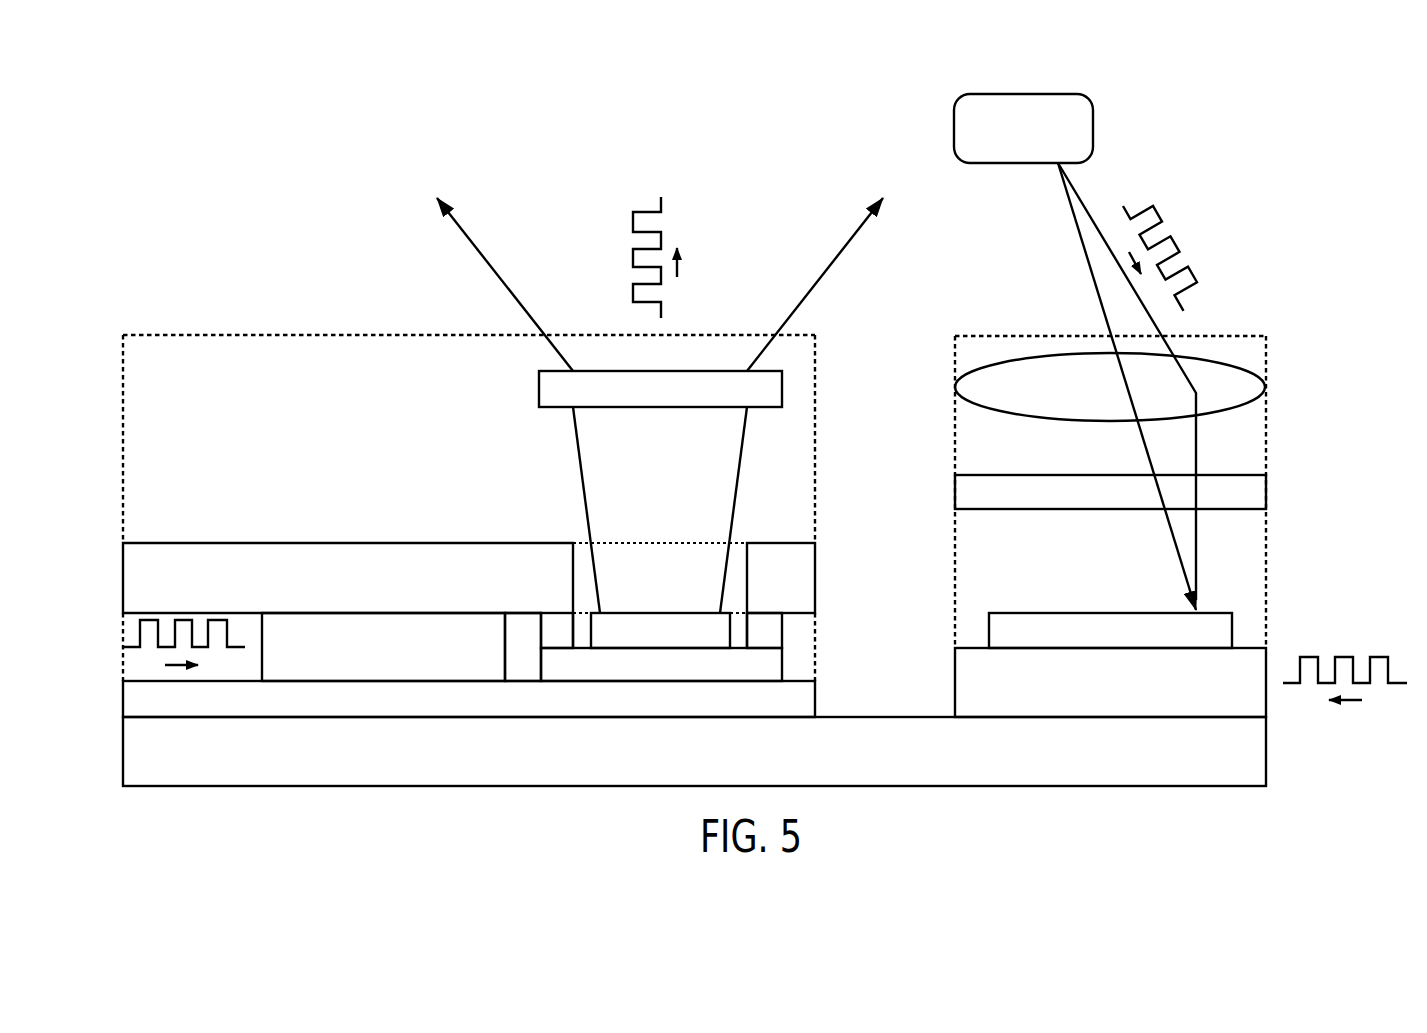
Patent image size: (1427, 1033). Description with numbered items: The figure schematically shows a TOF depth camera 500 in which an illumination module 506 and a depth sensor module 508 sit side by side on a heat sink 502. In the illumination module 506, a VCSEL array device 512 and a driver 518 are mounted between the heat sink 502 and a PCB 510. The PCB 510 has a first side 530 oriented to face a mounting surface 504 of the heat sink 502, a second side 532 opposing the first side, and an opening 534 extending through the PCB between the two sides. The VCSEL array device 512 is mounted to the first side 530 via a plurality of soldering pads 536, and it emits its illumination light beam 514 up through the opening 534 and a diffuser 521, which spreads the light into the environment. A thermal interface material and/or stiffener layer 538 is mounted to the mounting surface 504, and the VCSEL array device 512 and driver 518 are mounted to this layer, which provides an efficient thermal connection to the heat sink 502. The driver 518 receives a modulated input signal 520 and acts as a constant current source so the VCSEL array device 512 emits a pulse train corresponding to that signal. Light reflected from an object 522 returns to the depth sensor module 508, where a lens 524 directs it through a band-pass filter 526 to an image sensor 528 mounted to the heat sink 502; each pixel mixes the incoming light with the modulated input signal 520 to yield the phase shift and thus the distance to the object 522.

The TOF depth camera 500 is at (206, 88).
The heat sink 502 is at (763, 762).
The mounting surface 504 is at (920, 716).
The illumination module 506 is at (208, 335).
The imaging module 508 is at (1040, 336).
The PCB 510 is at (387, 590).
The VCSEL array device 512 is at (630, 601).
The emitted light beam 514 is at (586, 508).
The driver 518 is at (437, 659).
The modulation signal 520 is at (140, 639).
The diffuser 521 is at (725, 399).
The target object 522 is at (1040, 139).
The imaging lens 524 is at (1113, 427).
The band pass filter (BPF) 526 is at (1040, 475).
The depth image sensor 528 is at (1075, 613).
The first side 530 is at (803, 615).
The second side 532 is at (813, 545).
The opening 534 is at (652, 523).
The soldering pads 536 is at (783, 638).
The thermal interface material and/or stiffener layer 538 is at (694, 712).